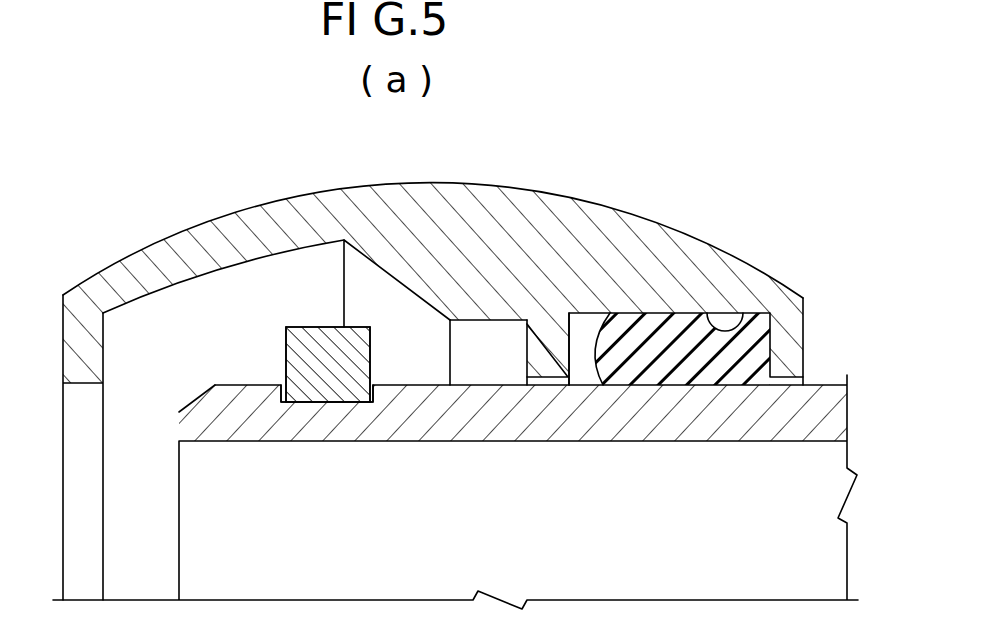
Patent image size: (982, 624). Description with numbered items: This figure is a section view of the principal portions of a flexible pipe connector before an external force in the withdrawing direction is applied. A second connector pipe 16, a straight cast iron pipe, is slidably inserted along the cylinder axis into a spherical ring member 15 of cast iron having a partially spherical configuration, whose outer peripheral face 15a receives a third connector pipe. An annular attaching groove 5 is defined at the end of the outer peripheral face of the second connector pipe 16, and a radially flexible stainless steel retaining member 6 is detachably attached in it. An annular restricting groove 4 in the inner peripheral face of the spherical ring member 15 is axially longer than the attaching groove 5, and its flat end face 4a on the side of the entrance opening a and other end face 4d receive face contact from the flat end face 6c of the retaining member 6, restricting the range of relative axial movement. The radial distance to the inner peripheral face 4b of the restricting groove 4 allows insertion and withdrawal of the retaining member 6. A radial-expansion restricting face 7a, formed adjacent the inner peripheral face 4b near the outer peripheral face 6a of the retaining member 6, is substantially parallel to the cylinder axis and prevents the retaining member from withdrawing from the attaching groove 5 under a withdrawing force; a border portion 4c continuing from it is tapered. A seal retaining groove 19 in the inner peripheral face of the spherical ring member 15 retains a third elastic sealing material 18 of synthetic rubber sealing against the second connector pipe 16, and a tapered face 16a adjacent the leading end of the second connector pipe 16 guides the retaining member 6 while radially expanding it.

The restricting groove 4 is at (433, 360).
The end face of restricting groove 4a is at (528, 372).
The inner peripheral face of restricting groove 4b is at (200, 276).
The border portion 4c is at (392, 279).
The other end face of restricting groove 4d is at (104, 348).
The attaching groove 5 is at (307, 398).
The retaining member 6 is at (348, 336).
The outer peripheral face of retaining member 6a is at (308, 325).
The end face of retaining member 6c is at (284, 362).
The radial-expansion restricting face 7a is at (480, 323).
The spherical ring member 15 is at (433, 249).
The outer peripheral face of spherical ring member 15a is at (618, 210).
The second connector pipe 16 is at (455, 463).
The tapered face 16a is at (192, 396).
The third elastic sealing material 18 is at (685, 385).
The seal retaining groove 19 is at (579, 316).
The entrance opening a is at (812, 374).